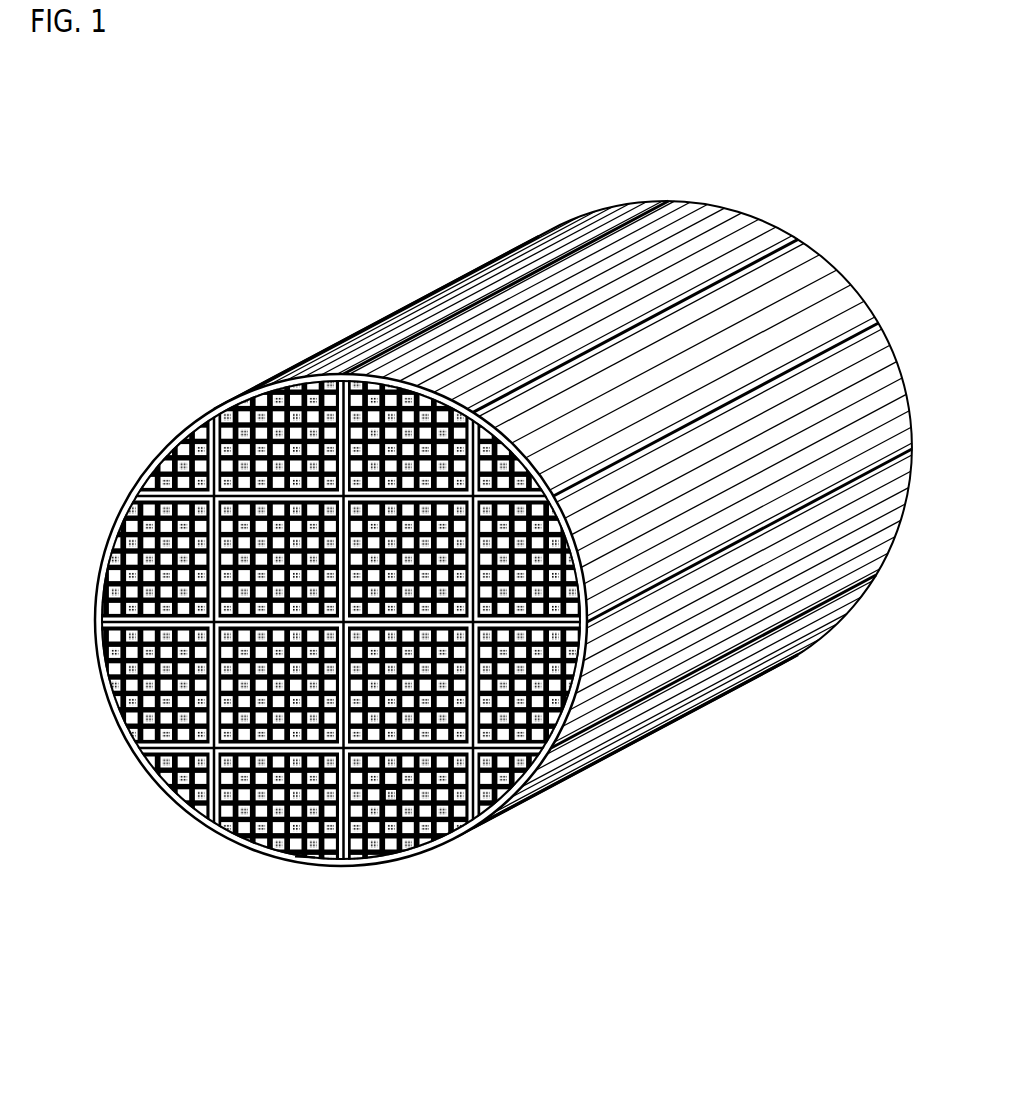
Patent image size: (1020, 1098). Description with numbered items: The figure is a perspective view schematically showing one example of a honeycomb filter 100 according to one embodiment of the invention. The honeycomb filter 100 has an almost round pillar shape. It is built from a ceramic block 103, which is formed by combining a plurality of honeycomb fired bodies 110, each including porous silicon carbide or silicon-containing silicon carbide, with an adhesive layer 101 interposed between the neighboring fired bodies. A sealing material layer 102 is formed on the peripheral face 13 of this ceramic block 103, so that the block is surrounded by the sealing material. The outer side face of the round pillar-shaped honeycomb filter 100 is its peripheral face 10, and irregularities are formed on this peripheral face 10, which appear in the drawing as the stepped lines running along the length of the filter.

The honeycomb filter 100 is at (478, 579).
The peripheral face 10 is at (861, 329).
The ceramic block 103 is at (119, 504).
The sealing material layer 102 is at (105, 664).
The adhesive layer 101 is at (214, 746).
The peripheral face 13 is at (305, 866).
The honeycomb fired body 110 is at (396, 805).